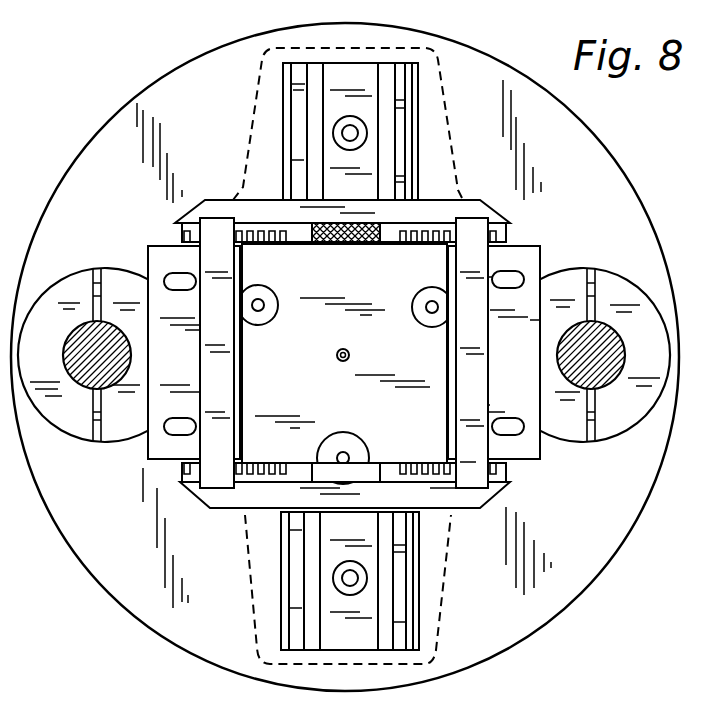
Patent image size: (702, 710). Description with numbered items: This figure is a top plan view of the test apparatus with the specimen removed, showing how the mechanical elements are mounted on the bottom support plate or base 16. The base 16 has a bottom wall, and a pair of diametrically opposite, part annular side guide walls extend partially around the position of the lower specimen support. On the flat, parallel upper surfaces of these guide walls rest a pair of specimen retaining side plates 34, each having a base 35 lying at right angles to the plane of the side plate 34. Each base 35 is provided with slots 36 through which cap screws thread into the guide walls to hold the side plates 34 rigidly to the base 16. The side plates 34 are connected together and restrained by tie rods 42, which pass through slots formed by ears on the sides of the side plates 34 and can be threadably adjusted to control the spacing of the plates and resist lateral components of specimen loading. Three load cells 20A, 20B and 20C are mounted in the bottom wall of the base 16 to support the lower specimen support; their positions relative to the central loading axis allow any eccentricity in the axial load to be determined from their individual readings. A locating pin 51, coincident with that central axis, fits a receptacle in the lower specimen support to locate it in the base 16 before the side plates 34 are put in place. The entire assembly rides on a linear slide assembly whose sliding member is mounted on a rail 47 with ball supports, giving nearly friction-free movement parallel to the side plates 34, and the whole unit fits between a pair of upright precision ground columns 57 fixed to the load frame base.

The bottom support plate 16 is at (272, 497).
The load cell 20A is at (420, 287).
The load cell 20B is at (270, 283).
The load cell 20C is at (350, 440).
The specimen retaining side plate 34 is at (472, 477).
The base of side plate 35 is at (340, 348).
The slot 36 is at (174, 272).
The tie rod 42 is at (260, 230).
The rail 47 is at (285, 95).
The locating pin 51 is at (341, 362).
The upright precision ground column 57 is at (80, 341).